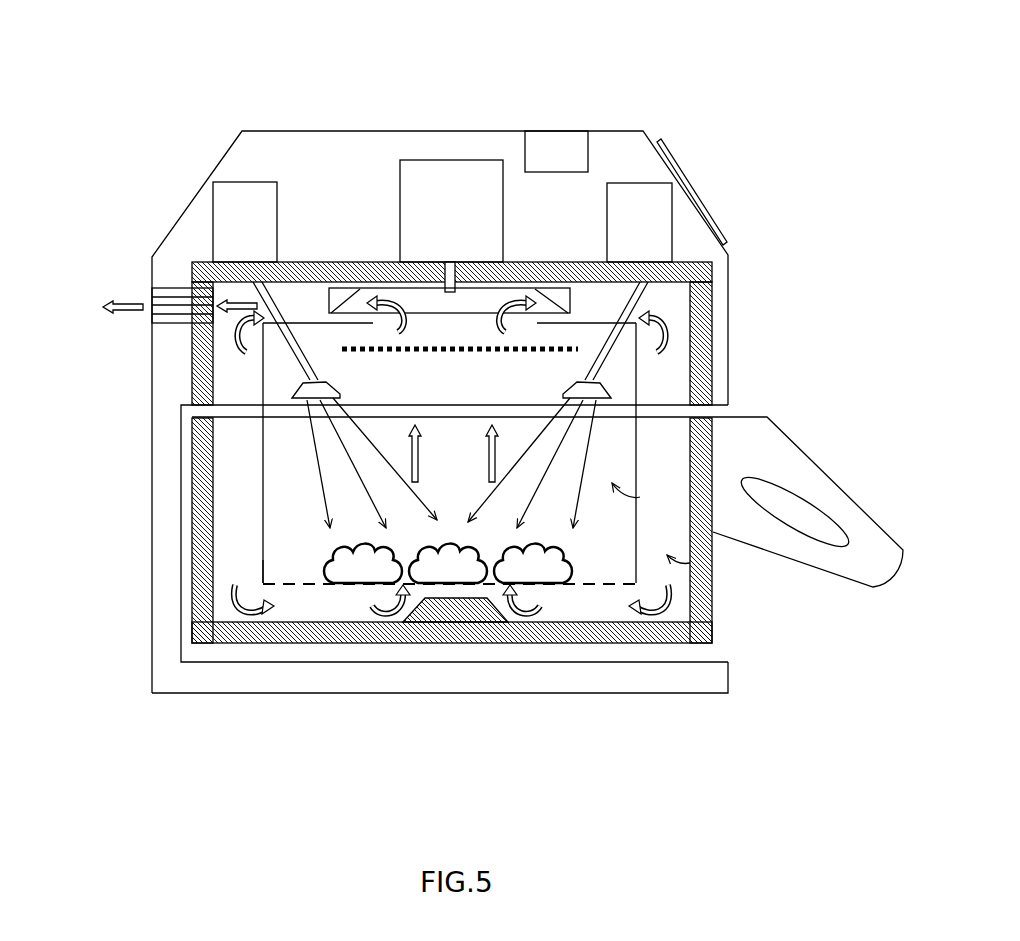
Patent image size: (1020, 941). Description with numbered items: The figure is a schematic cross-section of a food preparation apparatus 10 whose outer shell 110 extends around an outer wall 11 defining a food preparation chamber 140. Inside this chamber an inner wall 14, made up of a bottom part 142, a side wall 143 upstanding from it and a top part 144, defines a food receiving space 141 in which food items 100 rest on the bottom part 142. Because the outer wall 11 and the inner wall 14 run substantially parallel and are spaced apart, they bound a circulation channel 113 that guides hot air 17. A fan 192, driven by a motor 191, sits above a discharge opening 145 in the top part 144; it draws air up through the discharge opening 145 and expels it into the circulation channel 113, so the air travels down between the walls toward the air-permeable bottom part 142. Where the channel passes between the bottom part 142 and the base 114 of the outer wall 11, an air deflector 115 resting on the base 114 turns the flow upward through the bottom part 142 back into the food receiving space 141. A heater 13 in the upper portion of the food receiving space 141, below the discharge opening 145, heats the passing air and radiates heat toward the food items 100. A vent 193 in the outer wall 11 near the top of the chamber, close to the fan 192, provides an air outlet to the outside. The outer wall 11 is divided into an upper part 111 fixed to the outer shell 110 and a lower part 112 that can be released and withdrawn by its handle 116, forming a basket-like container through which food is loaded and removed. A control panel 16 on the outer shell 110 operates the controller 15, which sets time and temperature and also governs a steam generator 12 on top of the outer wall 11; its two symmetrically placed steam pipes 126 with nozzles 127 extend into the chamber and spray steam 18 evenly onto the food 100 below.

The apparatus 10 is at (151, 102).
The outer wall 11 is at (116, 462).
The steam generator 12 is at (213, 205).
The heater 13 is at (378, 354).
The inner wall 14 is at (265, 563).
The controller 15 is at (557, 148).
The control panel 16 is at (706, 200).
The hot air 17 is at (421, 456).
The steam 18 is at (316, 462).
The food items 100 is at (553, 563).
The outer shell 110 is at (170, 645).
The upper part 111 is at (200, 377).
The lower part 112 is at (200, 497).
The circulation channel 113 is at (693, 560).
The base 114 is at (592, 633).
The air deflector 115 is at (457, 622).
The handle 116 is at (775, 450).
The steam pipes 126 is at (280, 313).
The nozzles 127 is at (328, 381).
The food preparation chamber 140 is at (691, 380).
The food receiving space 141 is at (640, 497).
The bottom part 142 is at (350, 585).
The side wall 143 is at (263, 518).
The top part 144 is at (633, 324).
The discharge opening 145 is at (480, 328).
The motor 191 is at (400, 222).
The fan 192 is at (572, 311).
The vent 193 is at (181, 288).